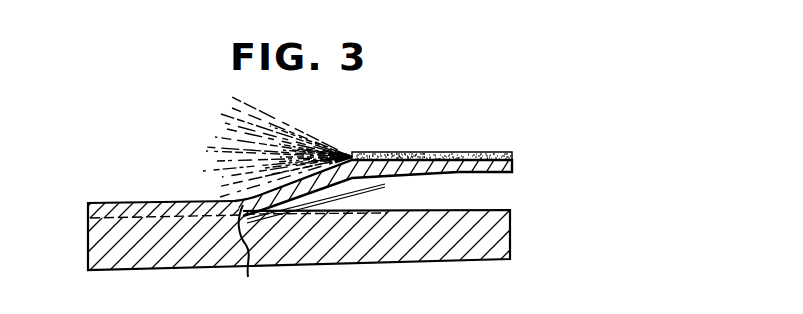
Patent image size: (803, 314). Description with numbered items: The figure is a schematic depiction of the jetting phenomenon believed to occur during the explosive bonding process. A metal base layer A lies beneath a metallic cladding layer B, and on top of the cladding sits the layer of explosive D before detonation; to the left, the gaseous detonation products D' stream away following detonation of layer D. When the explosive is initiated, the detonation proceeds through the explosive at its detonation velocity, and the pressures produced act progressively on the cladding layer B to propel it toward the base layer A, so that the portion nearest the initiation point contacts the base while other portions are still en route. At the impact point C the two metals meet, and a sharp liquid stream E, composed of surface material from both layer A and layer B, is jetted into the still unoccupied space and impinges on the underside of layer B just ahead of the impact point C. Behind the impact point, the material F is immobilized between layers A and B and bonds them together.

The metal base layer A is at (405, 259).
The metallic cladding layer B is at (160, 203).
The impact point C is at (254, 251).
The layer of explosive D is at (432, 138).
The gaseous detonation products D' is at (277, 140).
The sharp liquid stream E is at (368, 188).
The immobilized material F is at (90, 218).